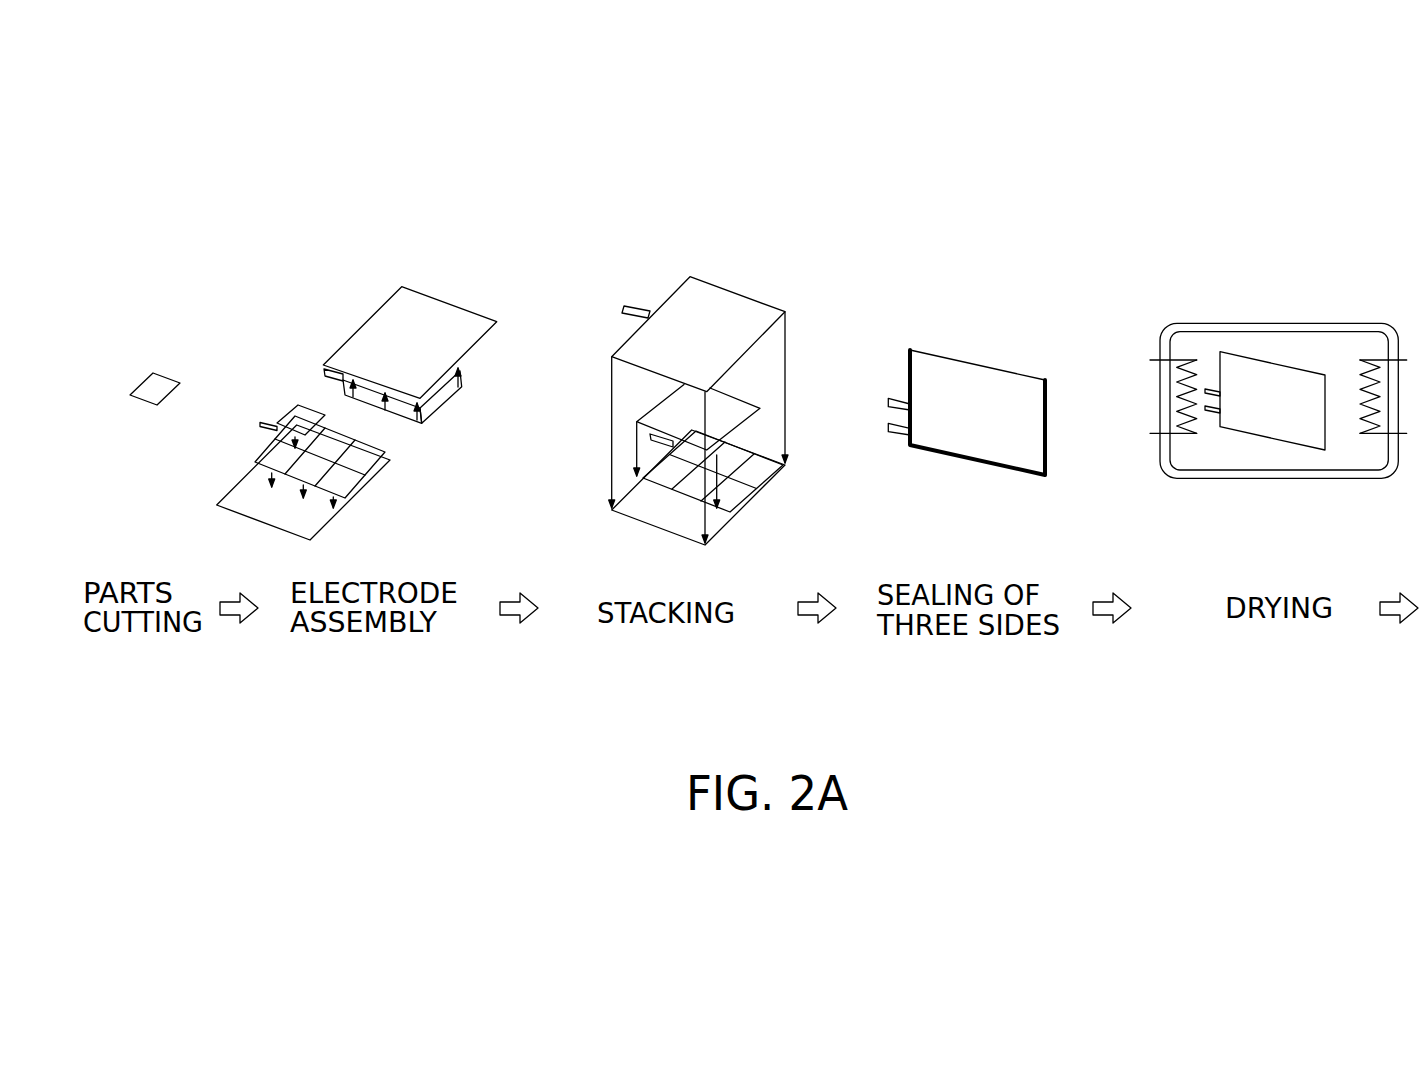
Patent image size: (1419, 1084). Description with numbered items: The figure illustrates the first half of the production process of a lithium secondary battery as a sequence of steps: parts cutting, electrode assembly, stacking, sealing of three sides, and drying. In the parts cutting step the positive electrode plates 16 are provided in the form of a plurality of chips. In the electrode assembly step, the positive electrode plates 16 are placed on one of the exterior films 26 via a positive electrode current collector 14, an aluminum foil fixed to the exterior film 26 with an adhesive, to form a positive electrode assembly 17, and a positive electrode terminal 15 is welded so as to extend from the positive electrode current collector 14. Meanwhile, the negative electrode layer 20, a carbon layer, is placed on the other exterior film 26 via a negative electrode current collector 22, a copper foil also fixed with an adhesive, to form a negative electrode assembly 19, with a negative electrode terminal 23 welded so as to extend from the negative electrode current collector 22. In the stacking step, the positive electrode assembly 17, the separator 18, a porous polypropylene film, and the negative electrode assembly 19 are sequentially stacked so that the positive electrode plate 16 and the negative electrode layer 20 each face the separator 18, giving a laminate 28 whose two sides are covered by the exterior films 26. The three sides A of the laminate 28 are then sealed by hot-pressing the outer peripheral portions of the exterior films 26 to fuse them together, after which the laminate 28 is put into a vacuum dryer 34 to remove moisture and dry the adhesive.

The positive electrode current collector 14 is at (307, 421).
The positive electrode terminal 15 is at (260, 423).
The positive electrode plate 16 is at (156, 377).
The positive electrode assembly 17 is at (615, 525).
The separator 18 is at (743, 410).
The negative electrode assembly 19 is at (703, 268).
The negative electrode layer 20 is at (441, 415).
The negative electrode current collector 22 is at (433, 410).
The negative electrode terminal 23 is at (322, 371).
The exterior film 26 is at (443, 318).
The laminate 28 is at (1012, 387).
The vacuum dryer 34 is at (1268, 477).
The three sides A is at (910, 363).